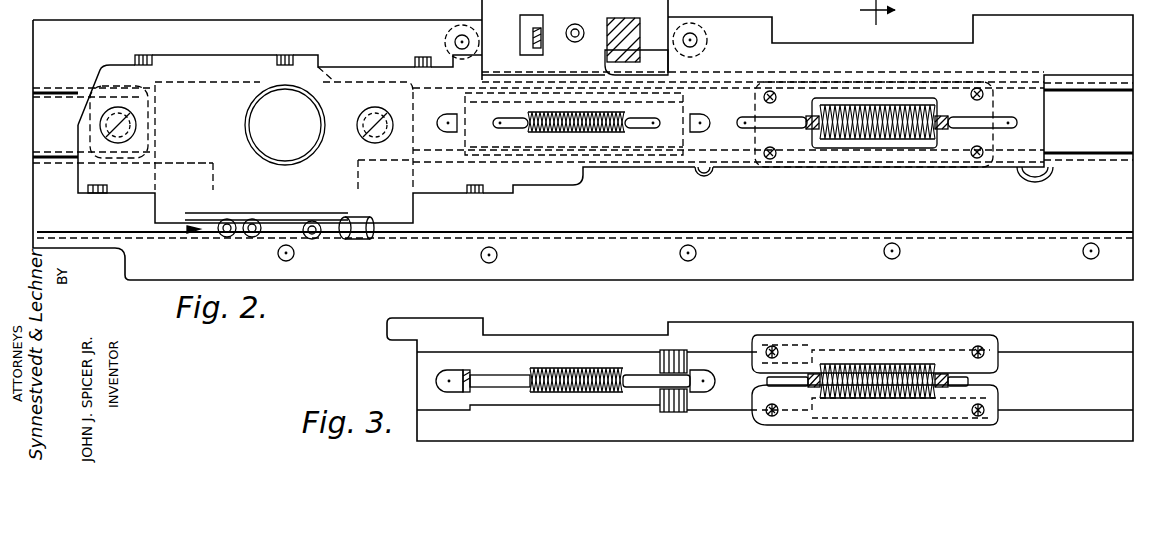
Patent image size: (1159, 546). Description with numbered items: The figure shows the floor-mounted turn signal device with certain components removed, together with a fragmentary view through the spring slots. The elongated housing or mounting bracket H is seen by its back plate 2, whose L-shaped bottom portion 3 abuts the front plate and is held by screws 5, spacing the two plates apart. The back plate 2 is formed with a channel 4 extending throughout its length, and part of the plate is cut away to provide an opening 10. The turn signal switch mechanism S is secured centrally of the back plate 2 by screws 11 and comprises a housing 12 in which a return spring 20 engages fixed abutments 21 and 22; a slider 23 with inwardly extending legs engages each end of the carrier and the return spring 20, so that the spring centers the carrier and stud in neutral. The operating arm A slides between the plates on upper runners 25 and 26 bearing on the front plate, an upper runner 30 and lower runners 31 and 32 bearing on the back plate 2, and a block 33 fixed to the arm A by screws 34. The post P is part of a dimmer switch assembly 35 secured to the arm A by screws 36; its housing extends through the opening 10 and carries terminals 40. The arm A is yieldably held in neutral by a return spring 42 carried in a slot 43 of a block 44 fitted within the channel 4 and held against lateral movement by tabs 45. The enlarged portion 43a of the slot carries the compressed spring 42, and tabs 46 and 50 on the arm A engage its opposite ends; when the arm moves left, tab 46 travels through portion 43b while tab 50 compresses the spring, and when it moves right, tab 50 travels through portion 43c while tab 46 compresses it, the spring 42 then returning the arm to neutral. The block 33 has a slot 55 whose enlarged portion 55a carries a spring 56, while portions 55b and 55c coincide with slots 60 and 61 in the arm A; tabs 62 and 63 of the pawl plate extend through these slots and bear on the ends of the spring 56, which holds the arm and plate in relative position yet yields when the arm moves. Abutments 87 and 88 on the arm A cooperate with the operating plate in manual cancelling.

In FIG. 2, the back plate 2 is at (350, 20).
In FIG. 2, the L-shaped bottom portion 3 is at (314, 6).
In FIG. 2, the channel 4 is at (60, 95).
In FIG. 3, the channel 4 is at (1027, 355).
In FIG. 2, the screws 5 is at (555, 46).
In FIG. 2, the opening 10 is at (382, 296).
In FIG. 2, the screws 11 is at (478, 35).
In FIG. 2, the switch housing 12 is at (653, 15).
In FIG. 2, the return spring 20 is at (525, 50).
In FIG. 2, the fixed abutment 21 is at (524, 36).
In FIG. 2, the fixed abutment 22 is at (622, 34).
In FIG. 2, the slider 23 is at (657, 60).
In FIG. 2, the upper runner 25 is at (146, 55).
In FIG. 2, the upper runner 26 is at (421, 58).
In FIG. 2, the upper runner 30 is at (289, 55).
In FIG. 2, the lower runner 31 is at (98, 194).
In FIG. 2, the lower runner 32 is at (469, 194).
In FIG. 2, the block 33 is at (995, 90).
In FIG. 3, the block 33 is at (952, 343).
In FIG. 2, the screws 34 is at (771, 90).
In FIG. 3, the screws 34 is at (768, 348).
In FIG. 2, the dimmer switch assembly 35 is at (237, 70).
In FIG. 2, the screws 36 is at (133, 132).
In FIG. 2, the terminals 40 is at (205, 215).
In FIG. 2, the return spring 42 is at (598, 134).
In FIG. 3, the return spring 42 is at (598, 368).
In FIG. 2, the slot 43 is at (560, 135).
In FIG. 3, the slot 43 is at (566, 368).
In FIG. 3, the enlarged portion of slot 43a is at (562, 392).
In FIG. 3, the slot portion 43b is at (492, 390).
In FIG. 3, the slot portion 43c is at (648, 388).
In FIG. 2, the block 44 is at (684, 110).
In FIG. 3, the block 44 is at (669, 334).
In FIG. 2, the tabs 45 is at (455, 132).
In FIG. 3, the tabs 45 is at (453, 370).
In FIG. 2, the tab 46 is at (520, 128).
In FIG. 3, the tab 46 is at (527, 373).
In FIG. 2, the tab 50 is at (627, 128).
In FIG. 3, the tab 50 is at (627, 368).
In FIG. 2, the slot 55 is at (871, 145).
In FIG. 3, the slot 55 is at (903, 398).
In FIG. 3, the enlarged portion of slot 55a is at (873, 372).
In FIG. 3, the slot portion 55b is at (762, 381).
In FIG. 3, the slot portion 55c is at (988, 381).
In FIG. 2, the spring 56 is at (870, 100).
In FIG. 3, the spring 56 is at (872, 364).
In FIG. 2, the slot 60 is at (791, 135).
In FIG. 2, the slot 61 is at (956, 135).
In FIG. 2, the tab 62 is at (813, 135).
In FIG. 3, the tab 62 is at (823, 388).
In FIG. 2, the tab 63 is at (941, 140).
In FIG. 3, the tab 63 is at (939, 390).
In FIG. 2, the abutment 87 is at (706, 184).
In FIG. 2, the abutment 88 is at (1043, 185).
In FIG. 2, the operating arm A is at (94, 73).
In FIG. 2, the housing or mounting bracket H is at (767, 262).
In FIG. 2, the post P is at (280, 130).
In FIG. 2, the turn signal switch mechanism S is at (648, 26).